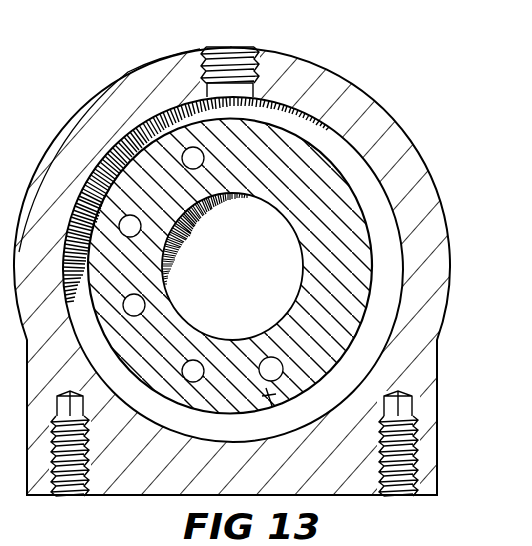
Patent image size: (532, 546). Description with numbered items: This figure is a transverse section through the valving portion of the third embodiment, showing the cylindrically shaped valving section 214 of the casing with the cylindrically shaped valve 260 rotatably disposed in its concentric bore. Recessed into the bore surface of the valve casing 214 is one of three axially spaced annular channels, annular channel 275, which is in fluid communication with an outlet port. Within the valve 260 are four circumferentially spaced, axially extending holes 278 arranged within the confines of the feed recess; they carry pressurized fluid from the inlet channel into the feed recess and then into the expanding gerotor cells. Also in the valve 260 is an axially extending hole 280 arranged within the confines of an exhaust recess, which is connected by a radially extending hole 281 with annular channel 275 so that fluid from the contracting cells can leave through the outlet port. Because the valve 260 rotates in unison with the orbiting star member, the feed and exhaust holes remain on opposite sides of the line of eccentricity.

The valving section 214 is at (424, 220).
The valve 260 is at (346, 211).
The annular channel 275 is at (296, 416).
The holes 278 is at (246, 48).
The hole 280 is at (283, 364).
The radially extending hole 281 is at (267, 393).